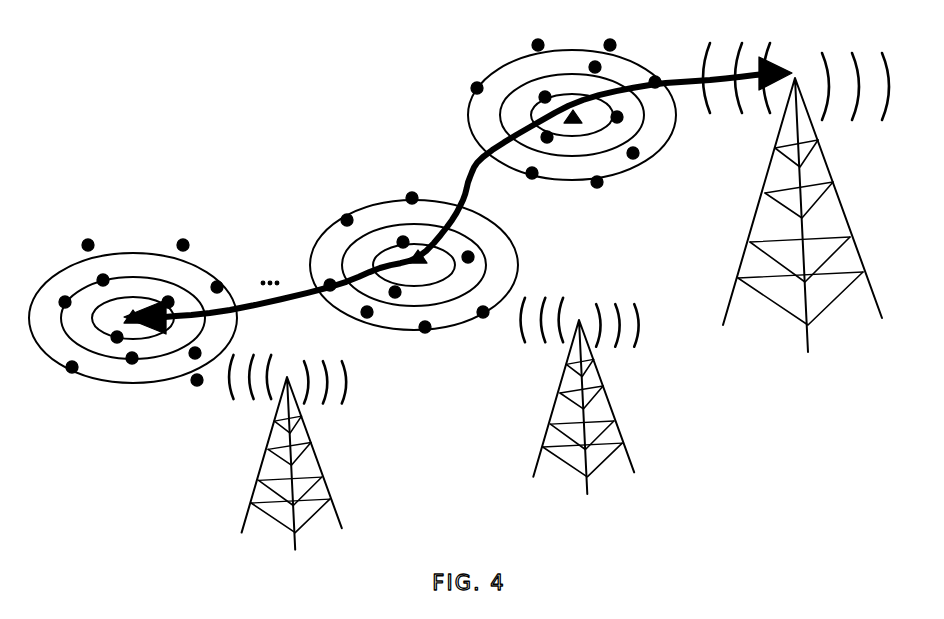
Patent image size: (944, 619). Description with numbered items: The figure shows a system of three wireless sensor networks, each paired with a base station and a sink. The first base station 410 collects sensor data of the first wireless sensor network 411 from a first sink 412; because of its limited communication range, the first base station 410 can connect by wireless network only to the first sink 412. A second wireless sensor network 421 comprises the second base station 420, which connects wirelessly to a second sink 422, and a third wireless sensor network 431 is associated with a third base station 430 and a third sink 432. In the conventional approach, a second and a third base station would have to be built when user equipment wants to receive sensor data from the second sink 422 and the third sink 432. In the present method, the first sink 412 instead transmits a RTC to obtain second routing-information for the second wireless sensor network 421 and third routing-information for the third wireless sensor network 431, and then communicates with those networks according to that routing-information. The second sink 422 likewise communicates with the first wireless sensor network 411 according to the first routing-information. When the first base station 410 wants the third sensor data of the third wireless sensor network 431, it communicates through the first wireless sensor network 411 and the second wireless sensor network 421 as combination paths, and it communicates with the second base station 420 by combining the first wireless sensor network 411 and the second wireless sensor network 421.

The first base station 410 is at (796, 208).
The first wireless sensor network 411 is at (572, 132).
The first sink 412 is at (562, 110).
The second base station 420 is at (599, 396).
The second wireless sensor network 421 is at (414, 283).
The second sink 422 is at (415, 243).
The third base station 430 is at (305, 452).
The third wireless sensor network 431 is at (133, 328).
The third sink 432 is at (145, 307).